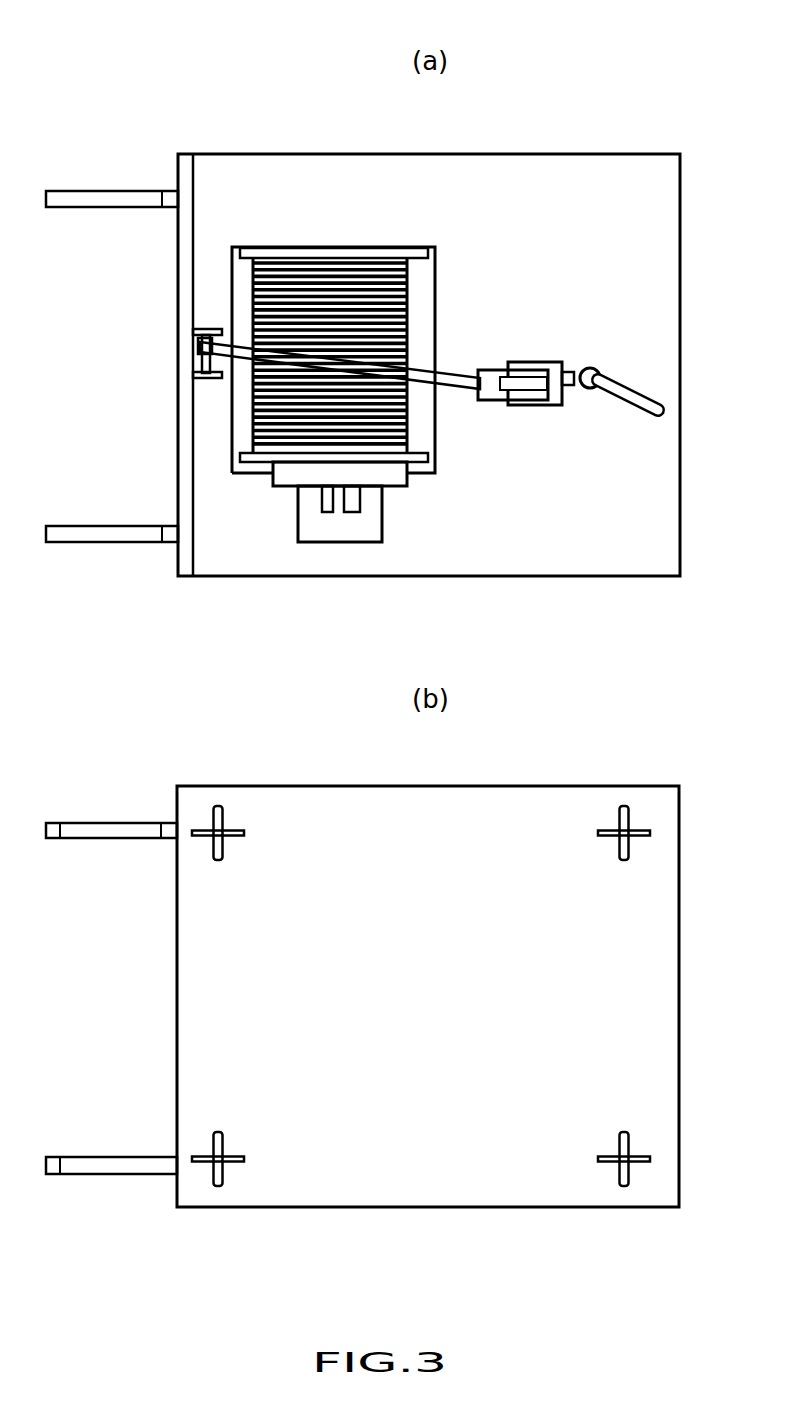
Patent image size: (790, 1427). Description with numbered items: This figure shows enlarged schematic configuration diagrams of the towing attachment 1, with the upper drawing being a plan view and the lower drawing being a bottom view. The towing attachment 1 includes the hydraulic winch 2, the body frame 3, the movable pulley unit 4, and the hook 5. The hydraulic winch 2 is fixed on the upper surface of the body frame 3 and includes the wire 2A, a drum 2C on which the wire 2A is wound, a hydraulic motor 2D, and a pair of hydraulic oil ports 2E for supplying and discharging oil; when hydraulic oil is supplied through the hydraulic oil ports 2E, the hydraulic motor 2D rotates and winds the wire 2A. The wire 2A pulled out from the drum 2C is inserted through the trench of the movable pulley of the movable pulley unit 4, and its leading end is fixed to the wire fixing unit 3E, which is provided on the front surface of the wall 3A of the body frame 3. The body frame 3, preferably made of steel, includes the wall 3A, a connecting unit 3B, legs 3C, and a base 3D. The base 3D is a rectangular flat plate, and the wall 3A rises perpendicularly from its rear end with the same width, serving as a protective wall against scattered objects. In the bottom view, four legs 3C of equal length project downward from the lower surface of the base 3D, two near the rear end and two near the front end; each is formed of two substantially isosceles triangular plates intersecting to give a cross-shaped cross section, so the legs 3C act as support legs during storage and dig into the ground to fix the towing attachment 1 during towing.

The towing attachment 1 is at (168, 102).
The hydraulic winch 2 is at (365, 247).
The wire 2A is at (460, 392).
The drum 2C is at (378, 423).
The hydraulic motor 2D is at (313, 520).
The hydraulic oil ports 2E is at (327, 503).
The body frame 3 is at (620, 153).
The wall 3A is at (185, 372).
The connecting unit 3B is at (86, 200).
The legs 3C is at (238, 827).
The base 3D is at (586, 290).
The wire fixing unit 3E is at (212, 380).
The movable pulley unit 4 is at (522, 394).
The hook 5 is at (660, 410).